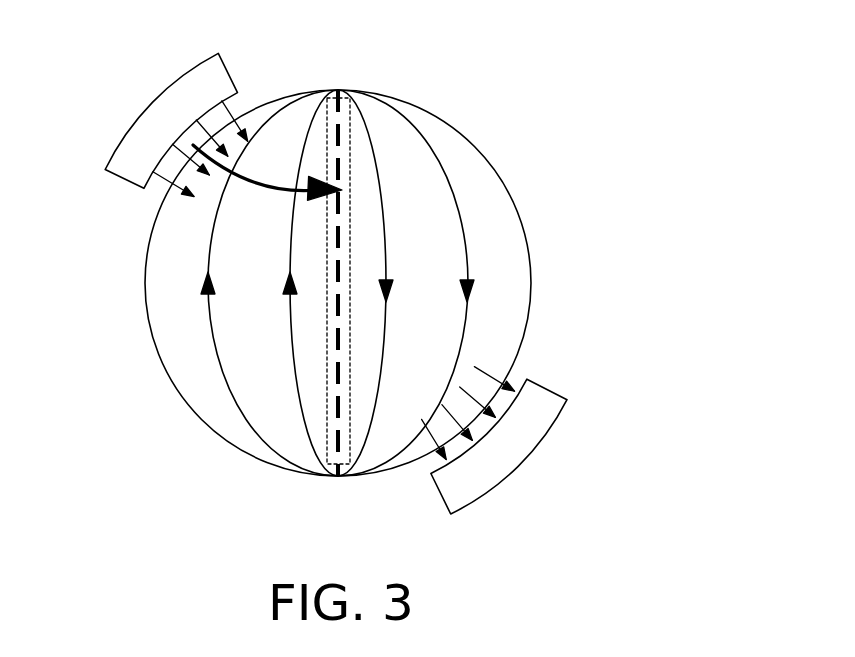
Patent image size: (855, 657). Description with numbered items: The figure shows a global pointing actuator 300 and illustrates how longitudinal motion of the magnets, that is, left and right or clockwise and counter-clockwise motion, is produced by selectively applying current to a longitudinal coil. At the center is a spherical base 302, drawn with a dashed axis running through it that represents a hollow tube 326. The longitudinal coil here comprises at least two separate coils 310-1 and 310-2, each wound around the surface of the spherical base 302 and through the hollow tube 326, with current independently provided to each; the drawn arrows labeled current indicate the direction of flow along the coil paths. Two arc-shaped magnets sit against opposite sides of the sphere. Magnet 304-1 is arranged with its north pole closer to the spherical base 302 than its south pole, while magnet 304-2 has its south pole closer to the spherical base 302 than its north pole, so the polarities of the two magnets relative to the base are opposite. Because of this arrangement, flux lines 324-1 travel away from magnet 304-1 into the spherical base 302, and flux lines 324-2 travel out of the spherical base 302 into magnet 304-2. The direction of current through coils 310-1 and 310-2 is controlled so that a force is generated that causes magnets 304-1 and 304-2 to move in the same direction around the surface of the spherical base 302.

The global pointing actuator 300 is at (650, 83).
The spherical base 302 is at (525, 253).
The magnet 304-1 is at (117, 138).
The magnet 304-2 is at (538, 445).
The longitudinal coil 310-1 is at (325, 365).
The longitudinal coil 310-2 is at (383, 200).
The flux lines 324-1 is at (158, 180).
The flux lines 324-2 is at (500, 378).
The hollow tube 326 is at (325, 365).